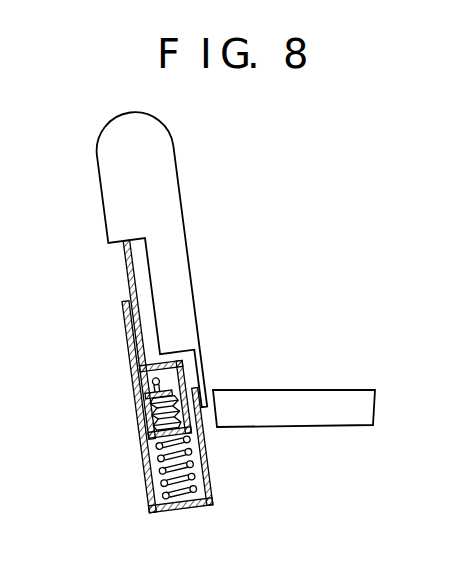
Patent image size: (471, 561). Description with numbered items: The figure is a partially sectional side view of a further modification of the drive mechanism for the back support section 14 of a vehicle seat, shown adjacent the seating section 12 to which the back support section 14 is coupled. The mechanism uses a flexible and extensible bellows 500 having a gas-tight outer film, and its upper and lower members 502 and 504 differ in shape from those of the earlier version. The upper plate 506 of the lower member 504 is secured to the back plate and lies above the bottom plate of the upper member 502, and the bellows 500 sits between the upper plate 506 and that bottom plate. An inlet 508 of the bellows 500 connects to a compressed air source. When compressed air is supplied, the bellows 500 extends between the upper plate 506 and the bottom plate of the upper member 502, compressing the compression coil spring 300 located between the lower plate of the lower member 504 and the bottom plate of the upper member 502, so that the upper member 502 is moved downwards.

The back support section 14 is at (178, 186).
The seating section 12 is at (281, 391).
The upper member 502 is at (113, 276).
The lower member 504 is at (144, 470).
The inlet 508 is at (150, 381).
The upper plate 506 is at (146, 393).
The bellows 500 is at (151, 426).
The compression coil spring 300 is at (198, 491).